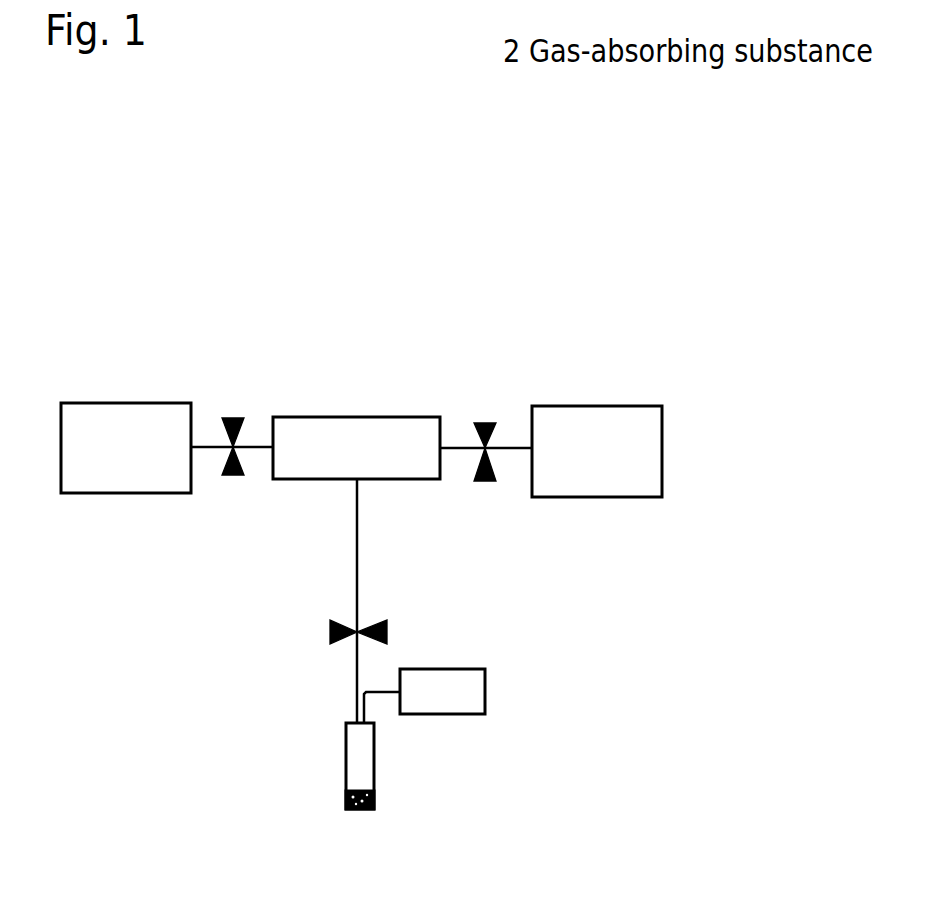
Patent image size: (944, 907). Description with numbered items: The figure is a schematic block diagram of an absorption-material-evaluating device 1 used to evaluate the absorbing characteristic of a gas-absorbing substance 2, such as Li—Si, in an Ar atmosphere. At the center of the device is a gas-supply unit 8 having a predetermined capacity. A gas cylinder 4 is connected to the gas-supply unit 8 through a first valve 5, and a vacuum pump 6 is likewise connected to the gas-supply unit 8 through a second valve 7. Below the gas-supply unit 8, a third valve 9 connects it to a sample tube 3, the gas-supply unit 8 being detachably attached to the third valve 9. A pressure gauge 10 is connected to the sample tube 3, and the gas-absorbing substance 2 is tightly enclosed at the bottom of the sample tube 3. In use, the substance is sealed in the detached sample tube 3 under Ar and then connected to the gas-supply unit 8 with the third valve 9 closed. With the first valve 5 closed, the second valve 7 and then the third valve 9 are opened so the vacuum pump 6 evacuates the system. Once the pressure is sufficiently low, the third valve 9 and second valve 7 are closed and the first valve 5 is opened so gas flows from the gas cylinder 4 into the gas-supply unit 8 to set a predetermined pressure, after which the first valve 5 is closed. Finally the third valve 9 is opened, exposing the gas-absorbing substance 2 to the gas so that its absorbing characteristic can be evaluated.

The absorption-material-evaluating device 1 is at (393, 308).
The gas-absorbing substance 2 is at (374, 802).
The sample tube 3 is at (374, 760).
The gas cylinder 4 is at (156, 402).
The first valve 5 is at (237, 417).
The vacuum pump 6 is at (615, 403).
The second valve 7 is at (483, 420).
The gas-supply unit 8 is at (303, 483).
The third valve 9 is at (332, 642).
The pressure gauge 10 is at (485, 689).